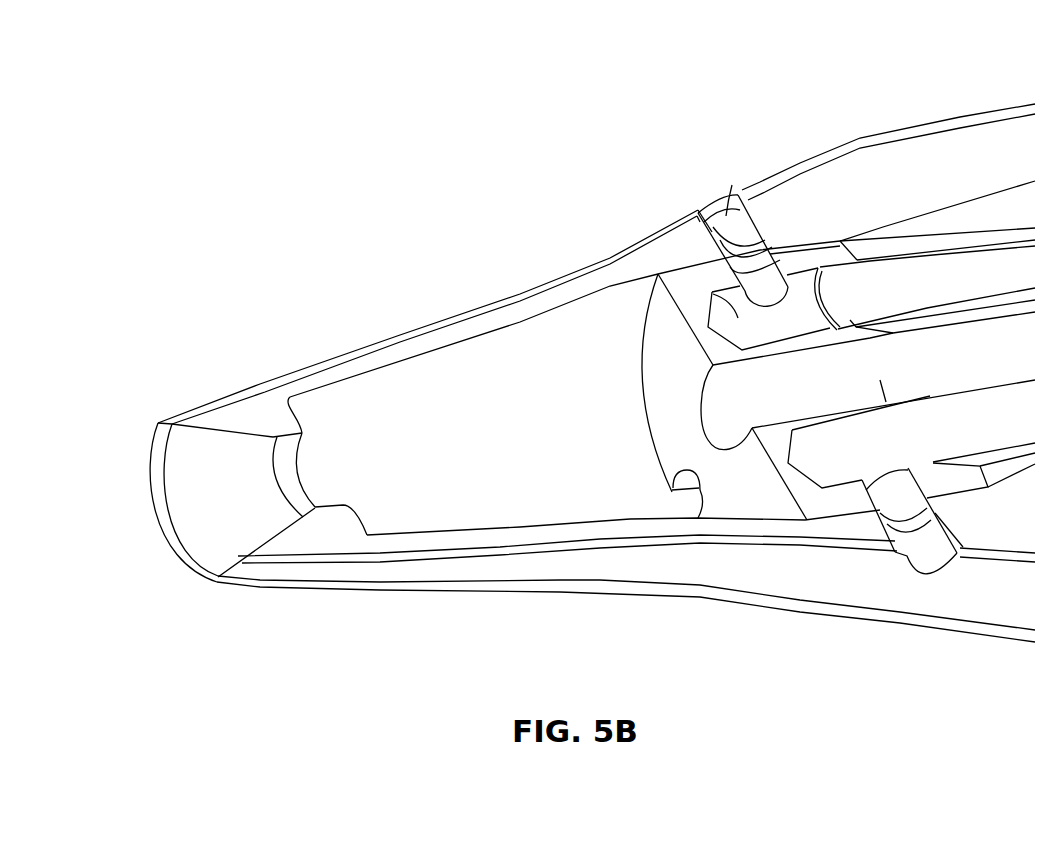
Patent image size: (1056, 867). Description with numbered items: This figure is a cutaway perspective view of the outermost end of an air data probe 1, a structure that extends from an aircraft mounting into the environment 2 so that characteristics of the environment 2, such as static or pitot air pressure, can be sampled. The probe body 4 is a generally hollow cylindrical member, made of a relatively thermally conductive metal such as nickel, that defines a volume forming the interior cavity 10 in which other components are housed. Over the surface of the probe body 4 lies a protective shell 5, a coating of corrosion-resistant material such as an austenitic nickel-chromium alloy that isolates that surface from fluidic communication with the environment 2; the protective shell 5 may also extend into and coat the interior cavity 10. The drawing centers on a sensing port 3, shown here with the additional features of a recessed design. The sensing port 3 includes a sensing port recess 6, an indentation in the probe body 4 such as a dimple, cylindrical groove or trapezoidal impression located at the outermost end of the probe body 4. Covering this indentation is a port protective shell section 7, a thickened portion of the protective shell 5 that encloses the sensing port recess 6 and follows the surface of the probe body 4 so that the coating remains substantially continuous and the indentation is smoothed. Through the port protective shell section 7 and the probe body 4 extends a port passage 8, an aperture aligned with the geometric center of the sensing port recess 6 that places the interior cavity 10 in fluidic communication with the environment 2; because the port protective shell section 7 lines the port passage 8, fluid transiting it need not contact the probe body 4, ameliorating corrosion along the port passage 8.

The air data probe 1 is at (143, 46).
The environment 2 is at (333, 200).
The sensing port 3 is at (753, 160).
The probe body 4 is at (950, 155).
The protective shell 5 is at (482, 305).
The sensing port recess 6 is at (732, 185).
The port protective shell section 7 is at (746, 194).
The port passage 8 is at (710, 232).
The interior cavity 10 is at (710, 292).